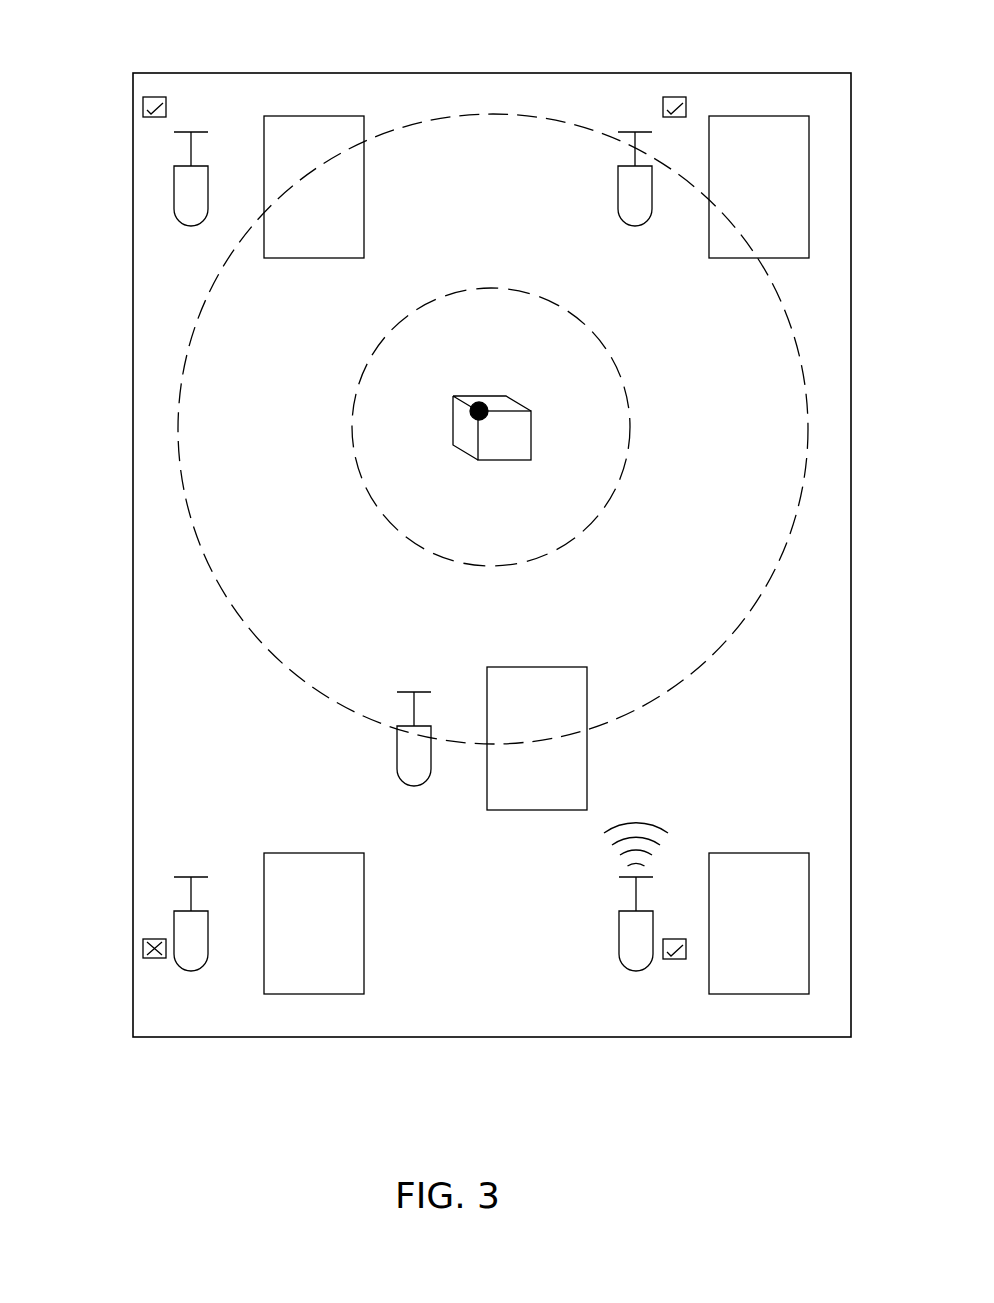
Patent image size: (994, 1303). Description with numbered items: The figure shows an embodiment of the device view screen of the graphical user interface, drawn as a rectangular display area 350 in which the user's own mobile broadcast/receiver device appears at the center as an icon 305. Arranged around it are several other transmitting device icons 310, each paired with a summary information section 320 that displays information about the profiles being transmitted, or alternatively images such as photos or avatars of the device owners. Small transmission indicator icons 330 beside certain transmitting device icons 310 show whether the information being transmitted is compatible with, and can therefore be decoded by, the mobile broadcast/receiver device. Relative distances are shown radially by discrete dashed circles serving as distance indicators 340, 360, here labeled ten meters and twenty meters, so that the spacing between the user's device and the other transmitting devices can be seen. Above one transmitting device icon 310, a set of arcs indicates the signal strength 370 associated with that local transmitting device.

The icon of the user's mobile broadcast/receiver device 305 is at (492, 405).
The transmitting device icon 310 is at (191, 132).
The summary information section 320 is at (313, 116).
The transmission indicator icon 330 is at (143, 107).
The distance indicator 340 is at (632, 430).
The map display area 350 is at (851, 698).
The distance indicator 360 is at (685, 677).
The signal strength 370 is at (648, 828).